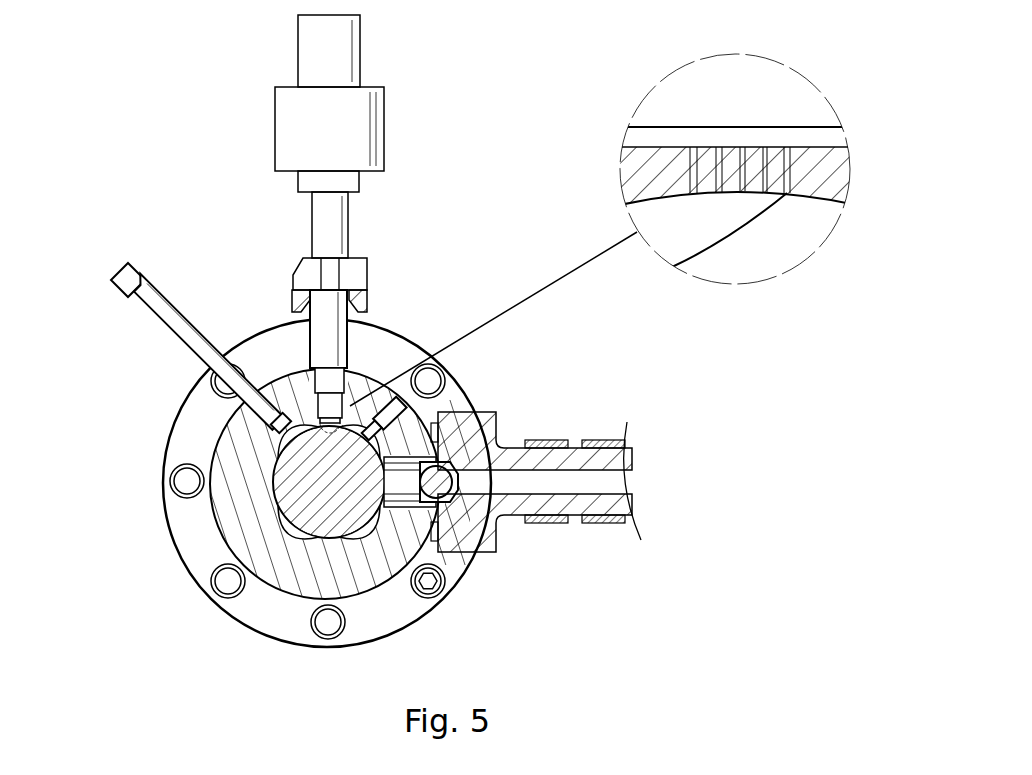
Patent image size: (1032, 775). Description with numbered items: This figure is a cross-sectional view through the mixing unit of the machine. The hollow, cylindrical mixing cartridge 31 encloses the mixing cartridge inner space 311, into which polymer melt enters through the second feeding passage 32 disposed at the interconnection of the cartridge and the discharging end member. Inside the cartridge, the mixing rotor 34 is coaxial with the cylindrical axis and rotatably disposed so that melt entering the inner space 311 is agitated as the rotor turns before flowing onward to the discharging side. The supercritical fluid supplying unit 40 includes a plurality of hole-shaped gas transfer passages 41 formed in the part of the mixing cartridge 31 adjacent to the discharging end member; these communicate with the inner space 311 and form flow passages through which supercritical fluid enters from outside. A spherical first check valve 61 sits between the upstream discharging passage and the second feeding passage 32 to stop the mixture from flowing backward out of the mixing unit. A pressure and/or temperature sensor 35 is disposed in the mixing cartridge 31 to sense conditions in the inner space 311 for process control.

The mixing cartridge 31 is at (283, 577).
The mixing cartridge inner space 311 is at (292, 520).
The second feeding passage 32 is at (386, 425).
The mixing rotor 34 is at (305, 479).
The pressure and/or temperature sensor 35 is at (150, 305).
The supercritical fluid supplying unit 40 is at (378, 285).
The gas transfer passages 41 is at (303, 420).
The first check valve 61 is at (452, 481).